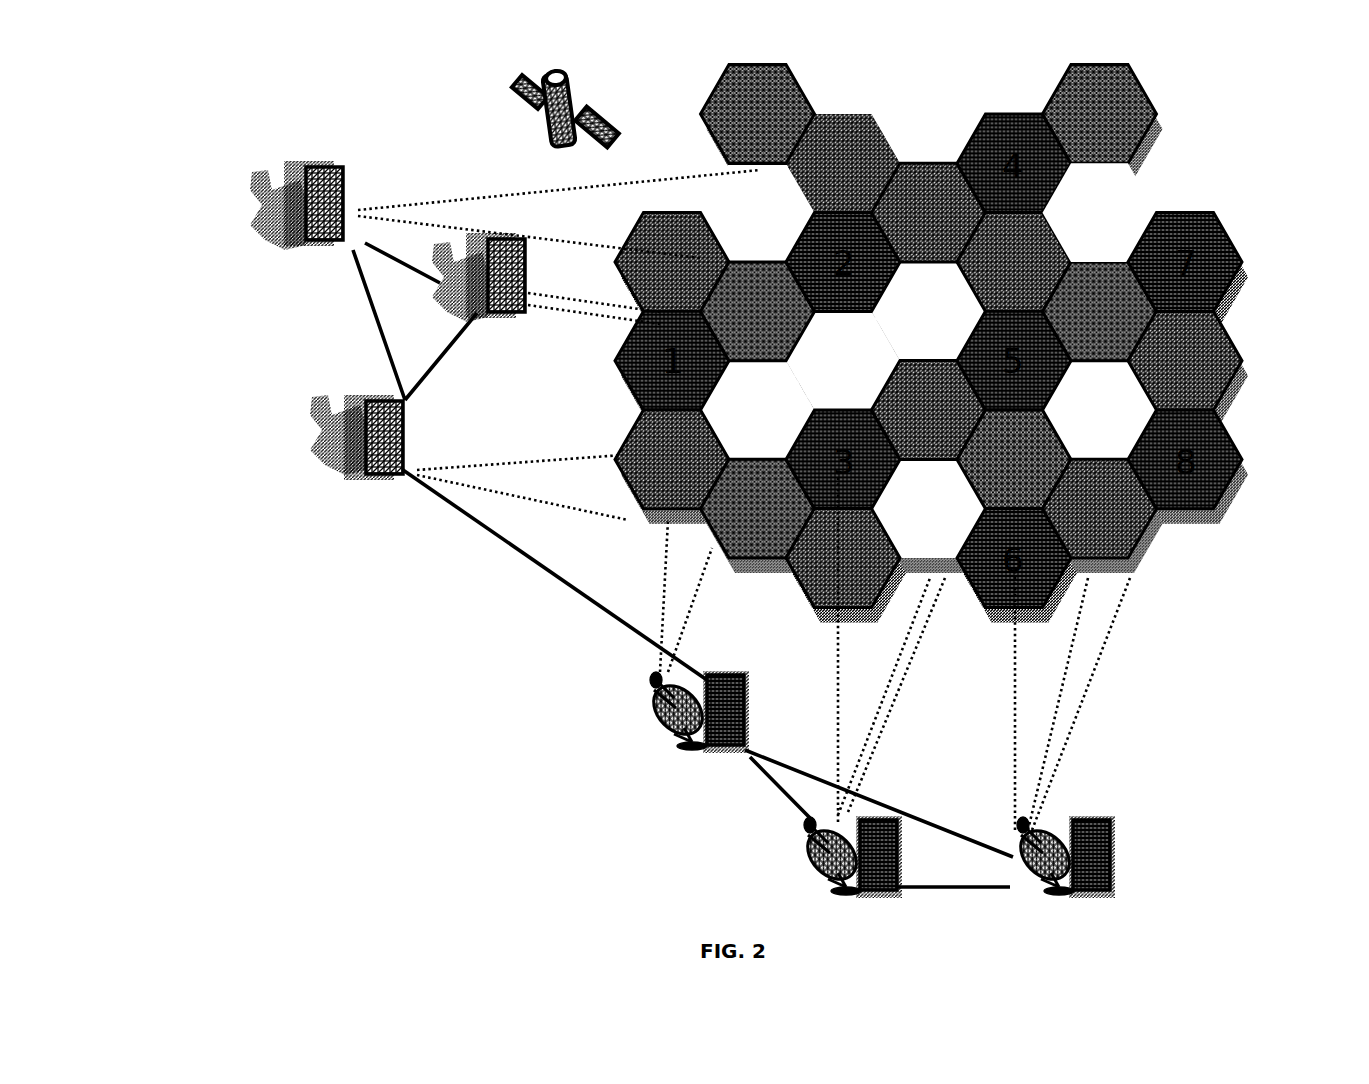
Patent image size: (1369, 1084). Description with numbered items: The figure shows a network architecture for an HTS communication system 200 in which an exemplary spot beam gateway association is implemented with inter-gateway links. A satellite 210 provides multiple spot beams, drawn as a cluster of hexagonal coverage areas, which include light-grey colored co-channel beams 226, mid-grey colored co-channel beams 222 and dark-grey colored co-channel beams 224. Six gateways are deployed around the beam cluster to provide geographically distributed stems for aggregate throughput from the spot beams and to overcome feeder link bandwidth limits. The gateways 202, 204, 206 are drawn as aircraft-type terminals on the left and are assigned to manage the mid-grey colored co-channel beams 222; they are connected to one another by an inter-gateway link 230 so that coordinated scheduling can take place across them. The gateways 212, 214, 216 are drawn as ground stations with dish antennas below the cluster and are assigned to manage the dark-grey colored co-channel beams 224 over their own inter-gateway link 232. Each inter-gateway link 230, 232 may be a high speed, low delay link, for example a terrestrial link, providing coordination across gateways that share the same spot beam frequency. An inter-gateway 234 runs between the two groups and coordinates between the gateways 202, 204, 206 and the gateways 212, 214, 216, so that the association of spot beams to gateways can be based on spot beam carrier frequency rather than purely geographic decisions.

The HTS communication system 200 is at (176, 109).
The gateway 202 is at (260, 207).
The gateway 204 is at (477, 248).
The gateway 206 is at (325, 440).
The satellite 210 is at (572, 80).
The gateway 212 is at (660, 713).
The gateway 214 is at (810, 870).
The gateway 216 is at (1072, 825).
The mid-grey colored co-channel beams 222 is at (785, 72).
The dark-grey colored co-channel beams 224 is at (1205, 237).
The light-grey colored co-channel beams 226 is at (1123, 185).
The inter-gateway link 230 is at (365, 243).
The inter-gateway link 232 is at (787, 793).
The inter-gateway 234 is at (600, 603).